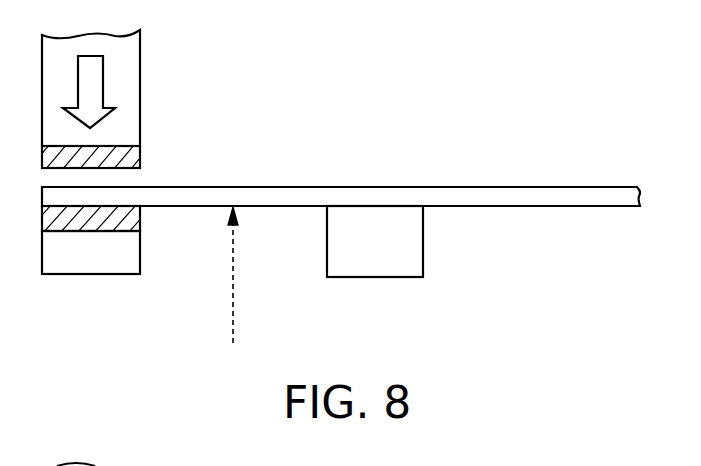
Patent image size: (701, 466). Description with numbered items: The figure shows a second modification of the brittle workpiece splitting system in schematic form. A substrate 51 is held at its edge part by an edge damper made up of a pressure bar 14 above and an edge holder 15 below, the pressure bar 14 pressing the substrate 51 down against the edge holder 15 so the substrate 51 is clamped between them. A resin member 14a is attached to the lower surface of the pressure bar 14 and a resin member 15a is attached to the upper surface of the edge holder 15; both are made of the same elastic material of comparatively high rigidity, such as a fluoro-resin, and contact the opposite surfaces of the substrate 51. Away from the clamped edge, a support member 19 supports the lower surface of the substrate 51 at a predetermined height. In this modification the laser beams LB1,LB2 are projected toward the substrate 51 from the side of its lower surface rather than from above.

The pressure bar 14 is at (130, 78).
The resin member 14a is at (133, 164).
The substrate 51 is at (578, 187).
The resin member 15a is at (132, 224).
The edge holder 15 is at (132, 268).
The support member 19 is at (413, 237).
The laser beams LB1,LB2 is at (233, 331).